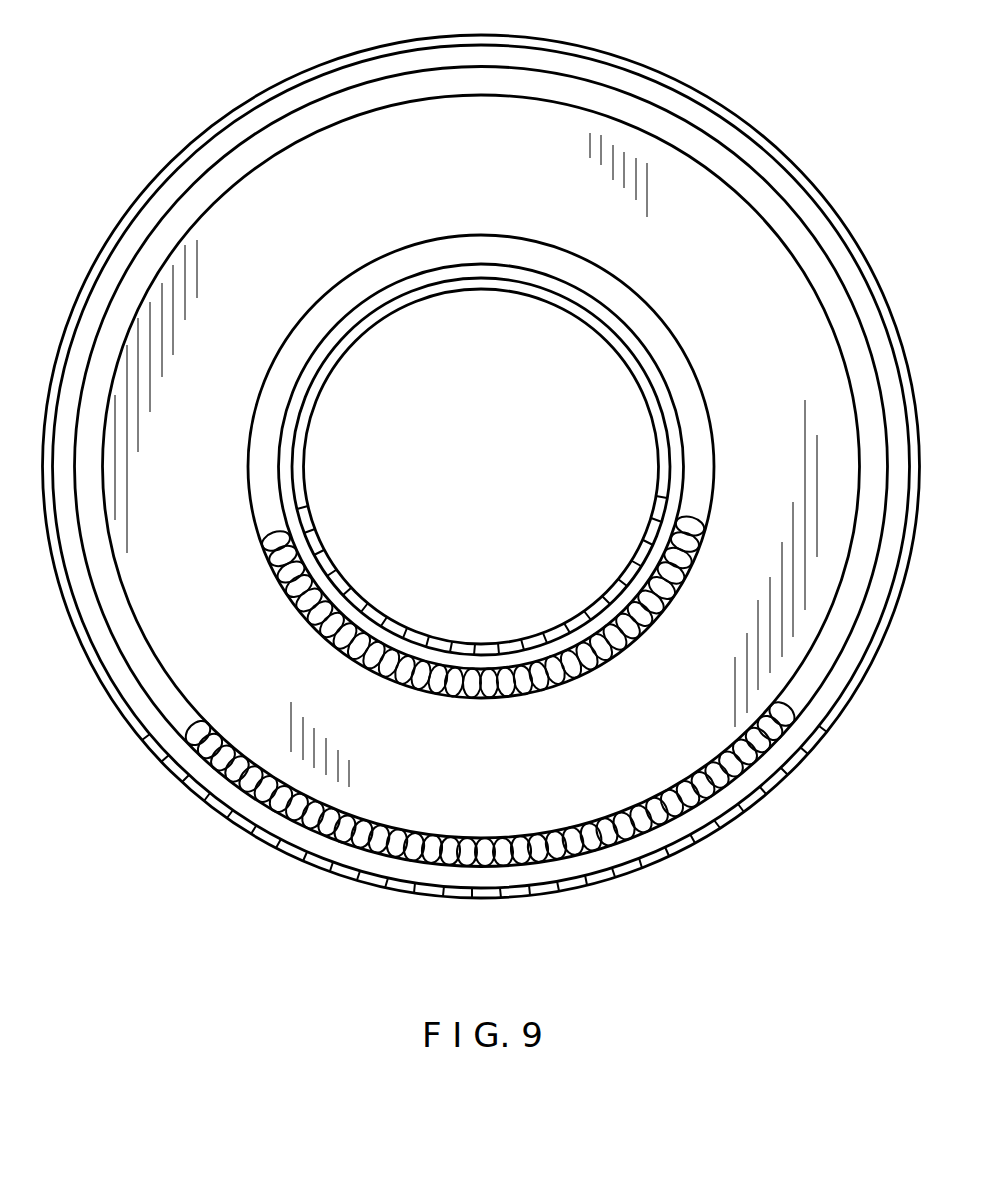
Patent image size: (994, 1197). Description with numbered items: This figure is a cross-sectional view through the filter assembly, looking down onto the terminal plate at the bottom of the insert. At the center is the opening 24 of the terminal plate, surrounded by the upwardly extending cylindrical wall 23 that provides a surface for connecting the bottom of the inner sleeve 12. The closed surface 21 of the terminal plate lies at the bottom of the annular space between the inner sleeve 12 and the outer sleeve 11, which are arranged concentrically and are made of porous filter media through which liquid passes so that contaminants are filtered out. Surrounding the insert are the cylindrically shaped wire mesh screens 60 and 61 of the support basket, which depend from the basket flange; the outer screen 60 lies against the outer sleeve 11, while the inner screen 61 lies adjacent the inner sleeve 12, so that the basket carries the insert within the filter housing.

The closed surface 21 is at (706, 272).
The wire mesh screen 60 is at (243, 833).
The outer sleeve 11 is at (380, 830).
The upwardly extending cylindrical wall 23 is at (677, 451).
The opening 24 is at (513, 293).
The wire mesh screen 61 is at (373, 610).
The inner sleeve 12 is at (302, 605).